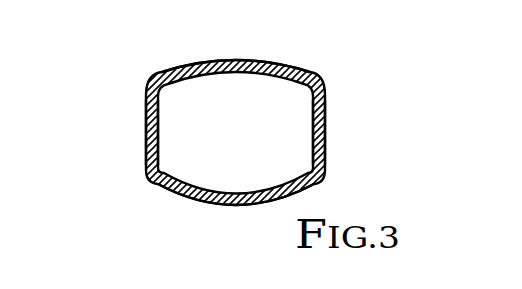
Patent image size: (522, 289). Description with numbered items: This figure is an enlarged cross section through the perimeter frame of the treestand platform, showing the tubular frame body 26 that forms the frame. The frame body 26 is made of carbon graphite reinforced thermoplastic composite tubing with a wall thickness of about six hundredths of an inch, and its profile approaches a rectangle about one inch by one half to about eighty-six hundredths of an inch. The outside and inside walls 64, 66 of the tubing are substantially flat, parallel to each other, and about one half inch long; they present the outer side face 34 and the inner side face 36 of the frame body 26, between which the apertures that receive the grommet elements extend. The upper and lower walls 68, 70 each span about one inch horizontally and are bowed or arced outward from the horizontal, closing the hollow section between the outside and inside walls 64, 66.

The frame body 26 is at (293, 62).
The outer side face 34 is at (325, 131).
The inner side face 36 is at (150, 136).
The outside wall 64 is at (325, 108).
The inside wall 66 is at (151, 107).
The upper wall 68 is at (213, 62).
The lower wall 70 is at (212, 206).